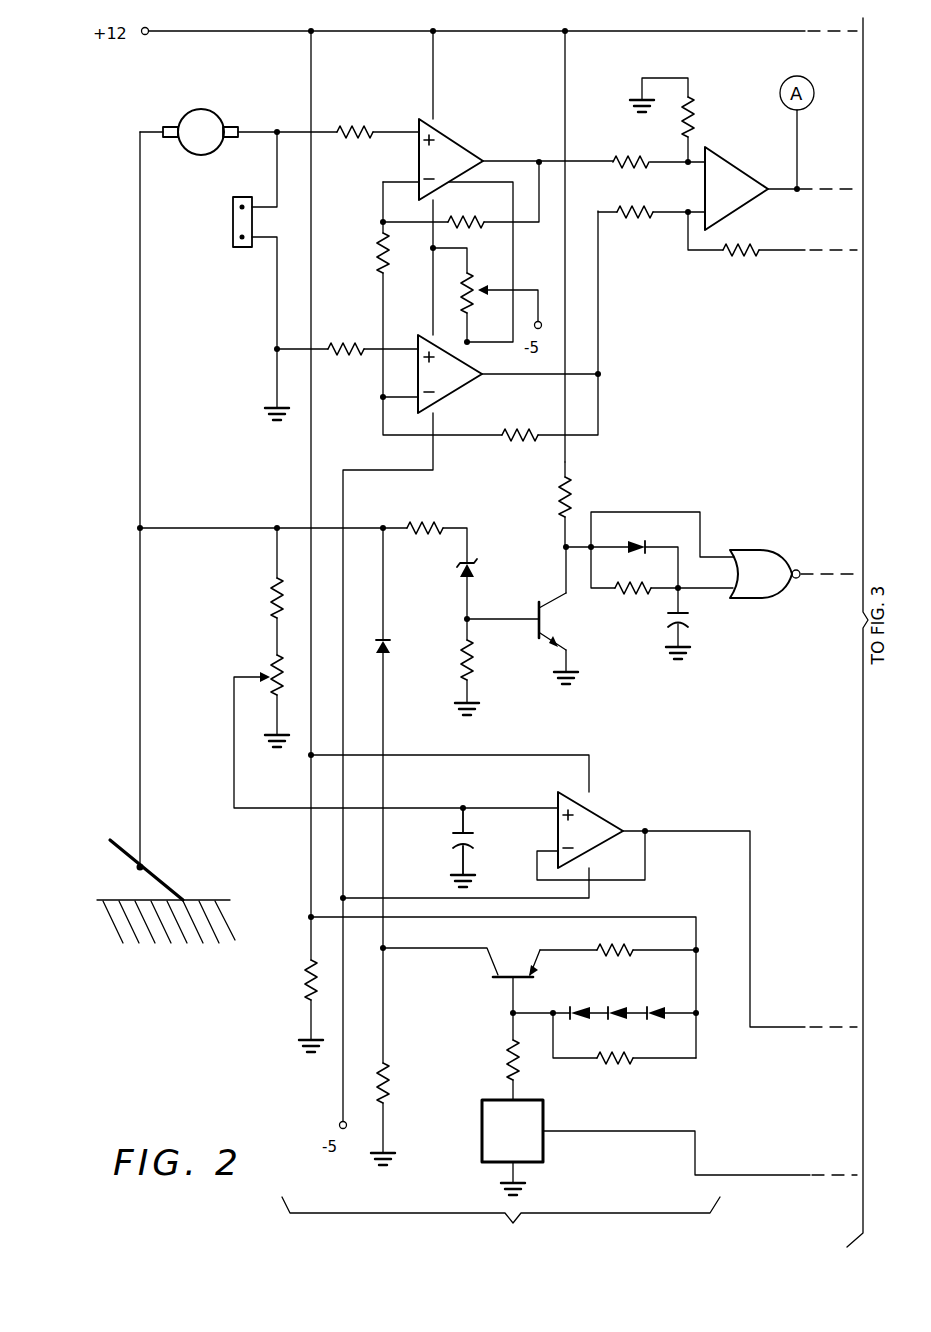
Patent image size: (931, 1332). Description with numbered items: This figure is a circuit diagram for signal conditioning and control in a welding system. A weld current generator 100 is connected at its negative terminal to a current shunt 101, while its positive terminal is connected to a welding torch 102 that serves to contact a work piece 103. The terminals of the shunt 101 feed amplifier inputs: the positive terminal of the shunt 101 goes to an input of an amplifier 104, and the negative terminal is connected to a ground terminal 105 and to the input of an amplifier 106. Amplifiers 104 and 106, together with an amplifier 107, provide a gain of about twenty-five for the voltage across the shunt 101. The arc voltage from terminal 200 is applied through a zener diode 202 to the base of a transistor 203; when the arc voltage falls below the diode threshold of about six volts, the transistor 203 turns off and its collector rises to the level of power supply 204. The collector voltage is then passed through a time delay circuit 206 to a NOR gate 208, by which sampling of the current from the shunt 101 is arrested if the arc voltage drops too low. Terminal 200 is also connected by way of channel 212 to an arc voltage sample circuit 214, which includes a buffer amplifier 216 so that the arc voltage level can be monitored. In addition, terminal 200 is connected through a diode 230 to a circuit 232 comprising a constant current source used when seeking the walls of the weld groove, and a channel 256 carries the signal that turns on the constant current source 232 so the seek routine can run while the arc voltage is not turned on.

The weld current generator 100 is at (206, 116).
The current shunt 101 is at (233, 218).
The welding torch 102 is at (205, 850).
The work piece 103 is at (207, 900).
The amplifier 104 is at (448, 148).
The ground terminal 105 is at (277, 370).
The amplifier 106 is at (448, 380).
The amplifier 107 is at (730, 174).
The terminal 200 is at (140, 528).
The zener diode 202 is at (473, 568).
The transistor 203 is at (540, 634).
The power supply 204 is at (675, 8).
The time delay circuit 206 is at (676, 590).
The NOR gate 208 is at (763, 568).
The channel 212 is at (450, 791).
The arc voltage sample circuit 214 is at (595, 743).
The buffer amplifier 216 is at (597, 833).
The diode 230 is at (391, 650).
The constant current source circuit 232 is at (501, 1098).
The channel 256 is at (772, 1174).